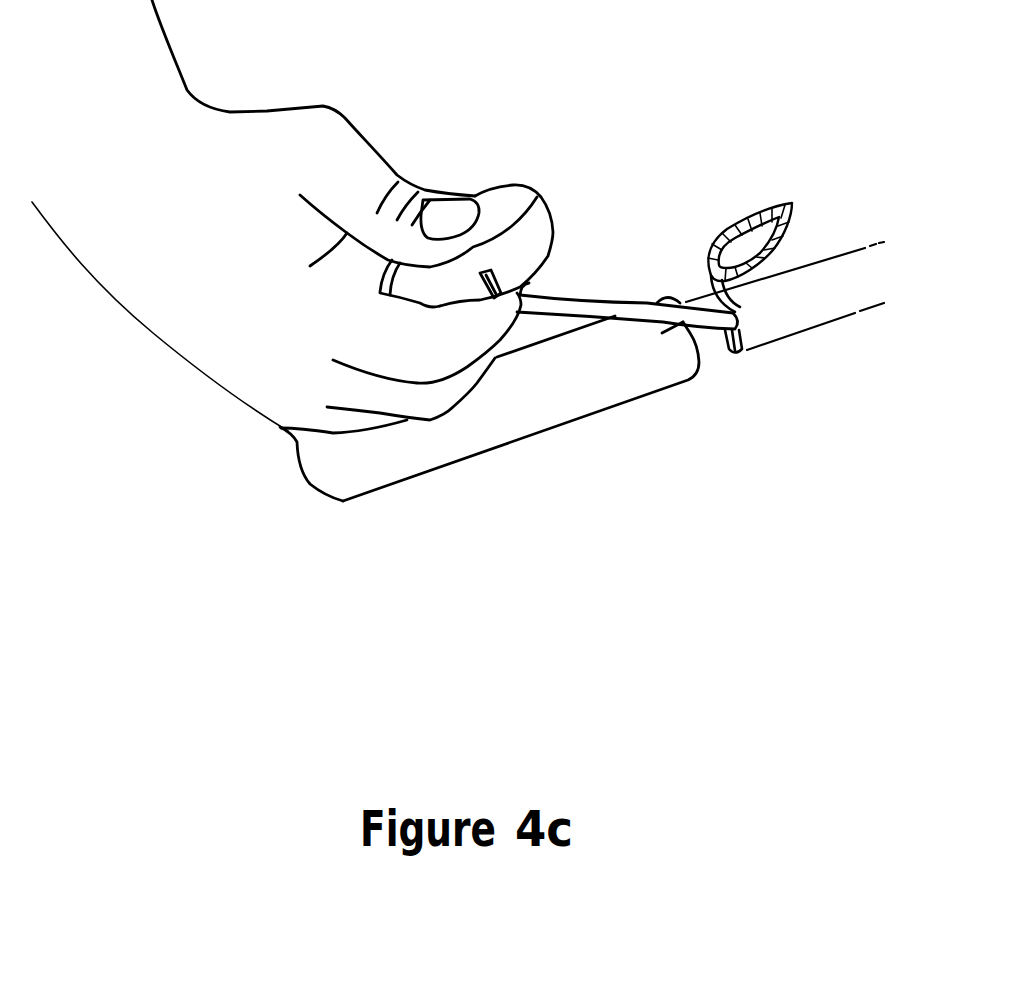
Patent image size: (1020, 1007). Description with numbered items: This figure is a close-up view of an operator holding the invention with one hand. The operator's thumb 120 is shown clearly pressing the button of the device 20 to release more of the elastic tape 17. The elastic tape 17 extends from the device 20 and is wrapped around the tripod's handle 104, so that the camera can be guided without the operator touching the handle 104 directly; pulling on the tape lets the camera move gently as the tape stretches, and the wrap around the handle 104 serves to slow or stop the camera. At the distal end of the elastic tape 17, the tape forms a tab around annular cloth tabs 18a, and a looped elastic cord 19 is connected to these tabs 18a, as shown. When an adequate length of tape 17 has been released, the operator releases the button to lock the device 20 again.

The thumb 120 is at (440, 187).
The device 20 is at (550, 205).
The elastic tape 17 is at (647, 293).
The looped elastic cord 19 is at (753, 200).
The annular cloth tabs 18a is at (747, 357).
The tripod's handle 104 is at (550, 430).